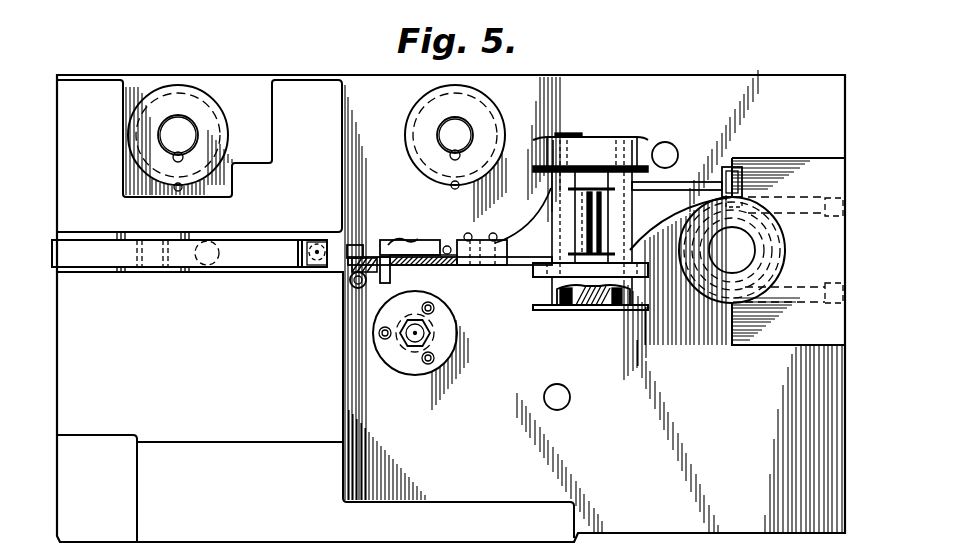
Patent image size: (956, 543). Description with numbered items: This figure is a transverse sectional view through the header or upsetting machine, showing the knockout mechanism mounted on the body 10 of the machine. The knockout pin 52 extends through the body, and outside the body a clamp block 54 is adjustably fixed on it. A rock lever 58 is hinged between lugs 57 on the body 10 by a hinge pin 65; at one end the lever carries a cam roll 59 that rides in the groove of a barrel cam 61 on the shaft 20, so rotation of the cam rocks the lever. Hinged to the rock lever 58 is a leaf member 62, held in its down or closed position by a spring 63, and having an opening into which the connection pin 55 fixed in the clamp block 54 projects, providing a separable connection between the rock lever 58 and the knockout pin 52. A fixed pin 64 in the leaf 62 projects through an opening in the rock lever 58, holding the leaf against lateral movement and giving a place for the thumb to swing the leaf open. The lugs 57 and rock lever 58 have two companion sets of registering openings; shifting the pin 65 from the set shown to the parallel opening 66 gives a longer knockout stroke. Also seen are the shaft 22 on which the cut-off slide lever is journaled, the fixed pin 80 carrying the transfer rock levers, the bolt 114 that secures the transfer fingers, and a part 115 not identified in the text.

The body 10 is at (325, 50).
The slide bar 115 is at (95, 262).
The bolt 114 is at (303, 268).
The connection pin 55 is at (362, 243).
The clamp block 54 is at (347, 270).
The knockout pin 52 is at (350, 283).
The fixed pin 64 is at (380, 284).
The leaf member 62 is at (423, 250).
The spring 63 is at (397, 240).
The rock lever 58 is at (517, 266).
The lugs 57 is at (594, 144).
The pin 65 is at (573, 133).
The parallel opening 66 is at (610, 309).
The cam roll 59 is at (745, 196).
The barrel cam 61 is at (766, 213).
The fixed pin 80 is at (668, 142).
The shaft 22 is at (563, 388).
The shaft 20 is at (740, 243).